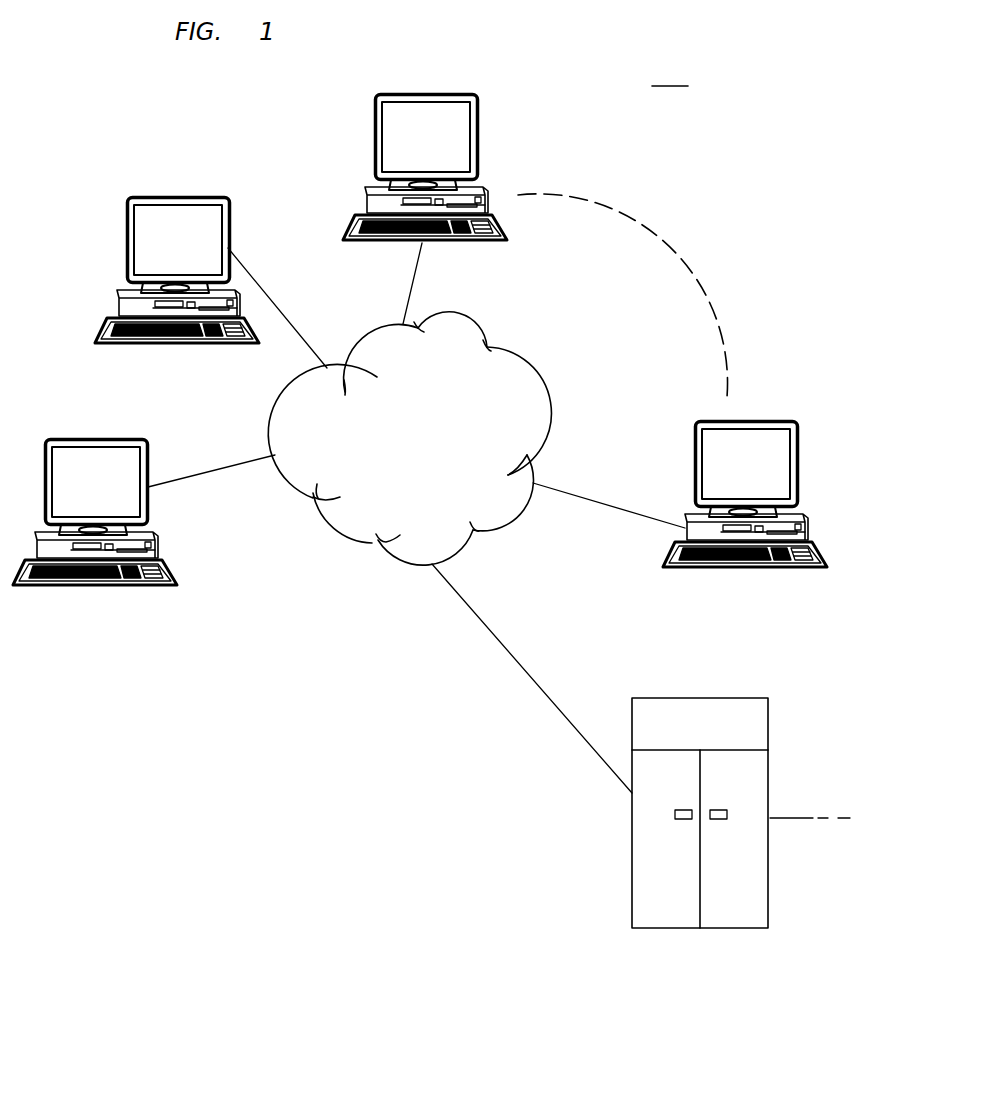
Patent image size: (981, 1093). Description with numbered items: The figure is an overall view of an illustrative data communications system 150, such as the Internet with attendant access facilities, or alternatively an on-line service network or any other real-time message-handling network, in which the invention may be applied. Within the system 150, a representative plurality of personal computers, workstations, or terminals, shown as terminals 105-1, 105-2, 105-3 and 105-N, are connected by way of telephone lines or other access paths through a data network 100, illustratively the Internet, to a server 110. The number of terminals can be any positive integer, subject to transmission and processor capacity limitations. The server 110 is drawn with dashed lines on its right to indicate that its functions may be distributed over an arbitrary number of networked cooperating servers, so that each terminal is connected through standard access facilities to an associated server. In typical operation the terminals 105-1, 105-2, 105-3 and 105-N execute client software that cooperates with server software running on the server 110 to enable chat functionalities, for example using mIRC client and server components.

The data network 100 is at (532, 363).
The terminal 105-1 is at (115, 439).
The terminal 105-2 is at (205, 197).
The terminal 105-3 is at (479, 138).
The terminal 105-N is at (770, 421).
The server 110 is at (737, 698).
The data communications system 150 is at (670, 73).